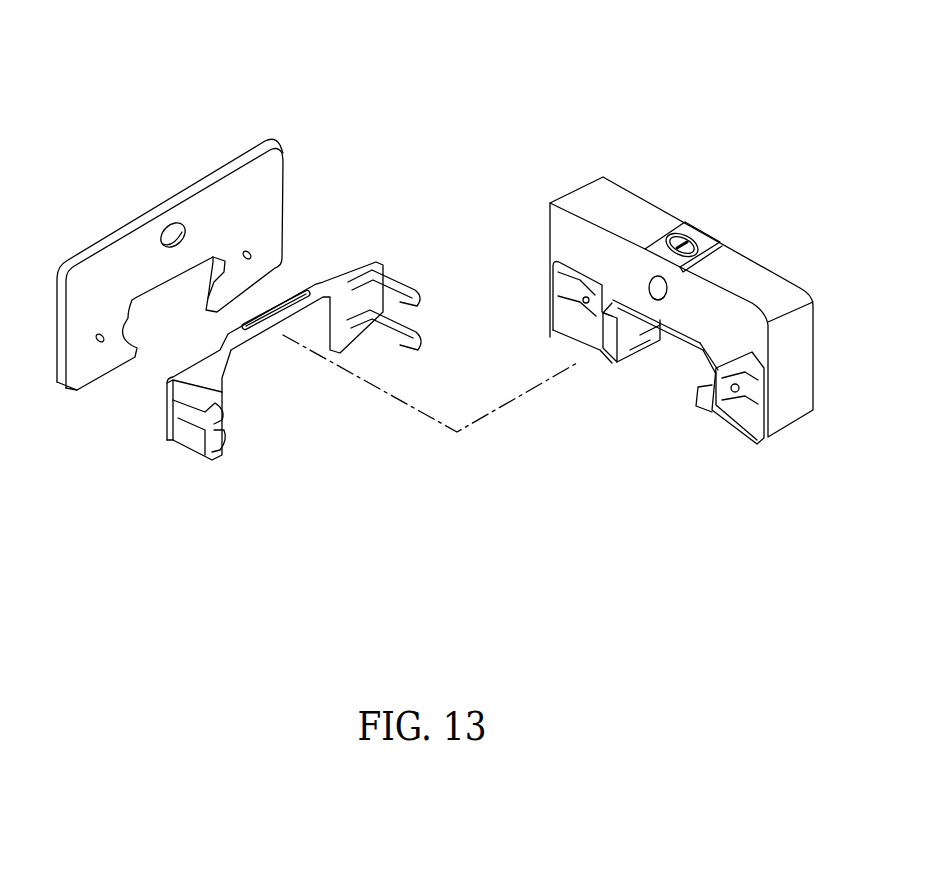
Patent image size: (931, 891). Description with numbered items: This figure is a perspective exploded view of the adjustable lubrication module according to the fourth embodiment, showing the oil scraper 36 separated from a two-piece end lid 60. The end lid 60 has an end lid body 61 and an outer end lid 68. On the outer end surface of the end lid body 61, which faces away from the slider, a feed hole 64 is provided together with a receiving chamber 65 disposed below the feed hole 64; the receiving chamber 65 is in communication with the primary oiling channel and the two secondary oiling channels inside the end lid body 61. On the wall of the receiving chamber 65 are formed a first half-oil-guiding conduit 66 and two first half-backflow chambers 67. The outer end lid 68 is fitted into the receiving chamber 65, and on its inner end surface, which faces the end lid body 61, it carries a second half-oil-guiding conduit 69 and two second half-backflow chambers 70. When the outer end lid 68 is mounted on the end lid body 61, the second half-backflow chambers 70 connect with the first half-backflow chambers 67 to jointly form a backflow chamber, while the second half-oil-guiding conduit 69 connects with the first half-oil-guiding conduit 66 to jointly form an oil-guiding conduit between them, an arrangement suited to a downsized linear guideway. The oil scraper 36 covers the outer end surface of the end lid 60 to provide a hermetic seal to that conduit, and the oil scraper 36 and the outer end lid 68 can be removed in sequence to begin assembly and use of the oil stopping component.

The oil scraper 36 is at (193, 169).
The end lid 60 is at (467, 89).
The end lid body 61 is at (573, 182).
The feed hole 64 is at (653, 277).
The receiving chamber 65 is at (693, 322).
The first half-oil-guiding conduit 66 is at (665, 318).
The first half-backflow chambers 67 is at (568, 284).
The outer end lid 68 is at (382, 251).
The second half-oil-guiding conduit 69 is at (253, 323).
The second half-backflow chambers 70 is at (418, 292).